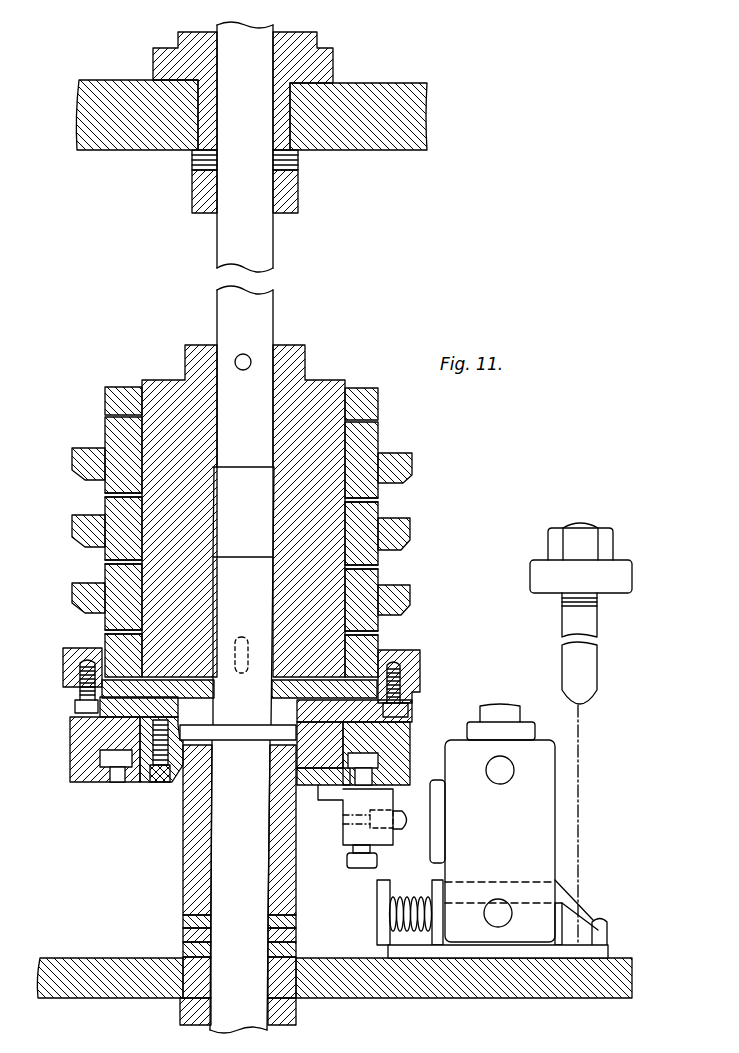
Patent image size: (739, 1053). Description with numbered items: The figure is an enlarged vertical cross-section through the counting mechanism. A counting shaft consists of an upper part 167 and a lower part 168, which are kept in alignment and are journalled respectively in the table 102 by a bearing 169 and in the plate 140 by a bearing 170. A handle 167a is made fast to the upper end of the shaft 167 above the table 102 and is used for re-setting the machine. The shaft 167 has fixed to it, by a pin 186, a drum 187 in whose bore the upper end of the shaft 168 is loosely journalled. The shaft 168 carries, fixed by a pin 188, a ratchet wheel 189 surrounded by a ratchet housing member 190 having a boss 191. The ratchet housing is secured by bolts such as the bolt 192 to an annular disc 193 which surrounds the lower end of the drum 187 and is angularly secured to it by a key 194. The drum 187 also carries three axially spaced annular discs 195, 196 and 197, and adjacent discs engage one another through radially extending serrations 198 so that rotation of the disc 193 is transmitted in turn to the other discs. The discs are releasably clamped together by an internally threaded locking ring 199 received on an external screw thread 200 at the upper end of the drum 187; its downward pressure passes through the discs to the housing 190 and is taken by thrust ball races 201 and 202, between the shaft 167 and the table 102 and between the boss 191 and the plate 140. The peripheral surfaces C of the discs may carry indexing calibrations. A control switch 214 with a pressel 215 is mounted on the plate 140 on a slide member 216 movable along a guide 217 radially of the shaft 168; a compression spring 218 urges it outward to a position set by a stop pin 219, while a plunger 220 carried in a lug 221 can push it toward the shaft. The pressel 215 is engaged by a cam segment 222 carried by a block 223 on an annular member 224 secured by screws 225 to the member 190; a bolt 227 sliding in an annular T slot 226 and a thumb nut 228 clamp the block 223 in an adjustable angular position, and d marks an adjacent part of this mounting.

The table 102 is at (90, 151).
The plate 140 is at (118, 990).
The upper part of counting shaft 167 is at (274, 290).
The handle 167a is at (333, 62).
The lower part of counting shaft 168 is at (252, 976).
The bearing 169 is at (290, 135).
The bearing 170 is at (183, 1000).
The pin 186 is at (237, 357).
The drum 187 is at (320, 386).
The pin 188 is at (230, 740).
The ratchet wheel 189 is at (208, 689).
The ratchet housing member 190 is at (78, 712).
The boss 191 is at (186, 853).
The bolt 192 is at (78, 672).
The annular disc 193 is at (421, 660).
The key 194 is at (242, 637).
The annular disc 195 is at (410, 598).
The annular disc 196 is at (410, 536).
The annular disc 197 is at (412, 463).
The serrations 198 is at (380, 500).
The locking ring 199 is at (380, 398).
The external screw thread 200 is at (145, 387).
The thrust ball race 201 is at (192, 166).
The thrust ball race 202 is at (184, 930).
The control switch 214 is at (510, 832).
The pressel 215 is at (428, 818).
The slide member 216 is at (587, 903).
The guide 217 is at (488, 955).
The compression spring 218 is at (392, 932).
The stop pin 219 is at (600, 920).
The plunger 220 is at (568, 662).
The lug 221 is at (542, 565).
The cam segment 222 is at (410, 828).
The block 223 is at (352, 833).
The annular member 224 is at (75, 783).
The screws 225 is at (161, 772).
The annular T slot 226 is at (118, 783).
The bolt 227 is at (365, 758).
The thumb nut 228 is at (358, 870).
The peripheral surfaces C is at (105, 497).
The block d is at (411, 762).